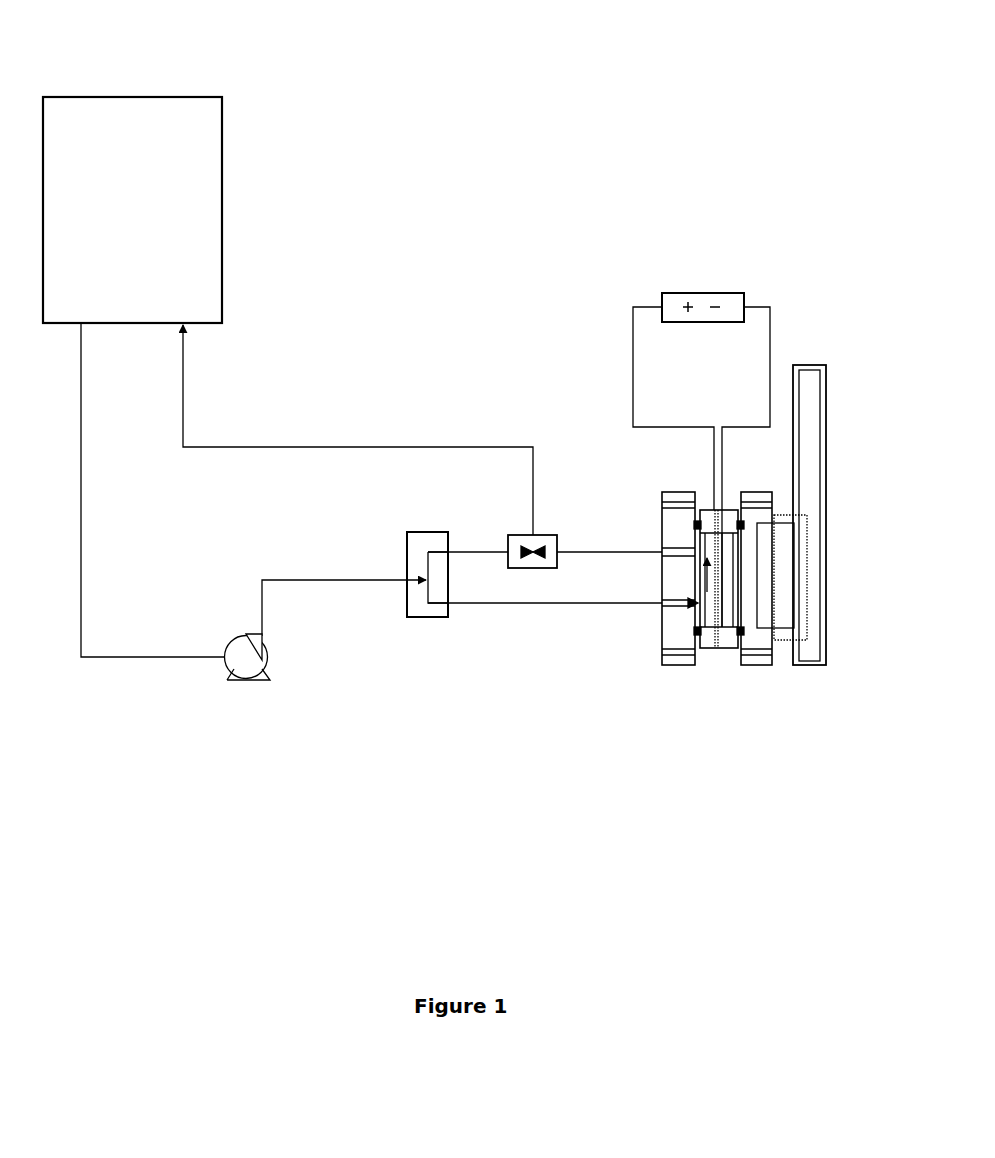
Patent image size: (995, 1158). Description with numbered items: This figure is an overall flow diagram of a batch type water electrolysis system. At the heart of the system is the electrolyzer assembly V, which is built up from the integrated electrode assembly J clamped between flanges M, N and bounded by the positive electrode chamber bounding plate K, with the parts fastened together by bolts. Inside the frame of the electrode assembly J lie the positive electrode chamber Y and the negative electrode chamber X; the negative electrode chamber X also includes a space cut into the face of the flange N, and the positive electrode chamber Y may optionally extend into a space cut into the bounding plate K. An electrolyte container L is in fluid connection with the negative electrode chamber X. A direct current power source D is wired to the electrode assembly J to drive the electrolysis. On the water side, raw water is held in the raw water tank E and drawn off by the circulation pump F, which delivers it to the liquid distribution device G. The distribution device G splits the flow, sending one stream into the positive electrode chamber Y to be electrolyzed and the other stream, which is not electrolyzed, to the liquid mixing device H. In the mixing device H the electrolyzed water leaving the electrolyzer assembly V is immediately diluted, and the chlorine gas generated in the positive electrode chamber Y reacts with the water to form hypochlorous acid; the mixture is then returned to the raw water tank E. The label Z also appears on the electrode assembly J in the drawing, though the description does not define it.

The raw water tank E is at (163, 95).
The direct current power source D is at (701, 291).
The circulation pump F is at (238, 699).
The liquid distribution device G is at (420, 624).
The liquid mixing device H is at (509, 535).
The positive electrode chamber bounding plate K is at (685, 612).
The flange M is at (680, 578).
The integrated electrode assembly J is at (720, 651).
The flange N is at (756, 578).
The electrolyte container L is at (812, 669).
The negative electrode chamber X is at (749, 580).
The positive electrode chamber Y is at (711, 549).
The membrane Z is at (737, 509).
The electrolyzer assembly V is at (739, 595).